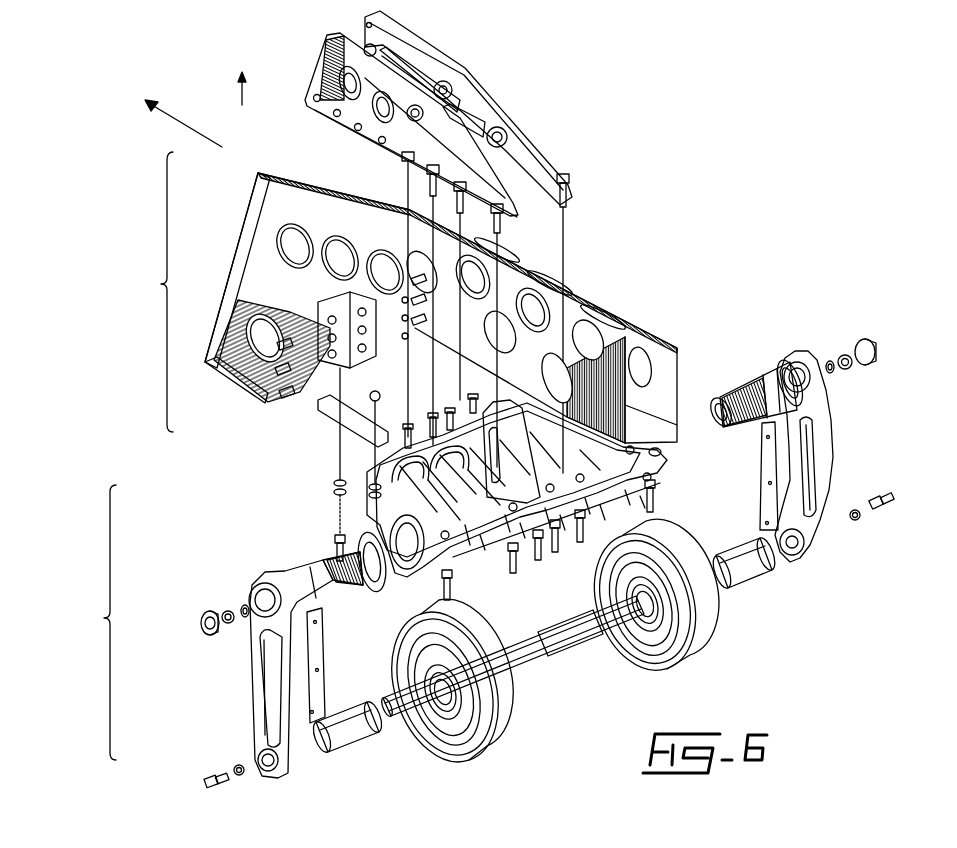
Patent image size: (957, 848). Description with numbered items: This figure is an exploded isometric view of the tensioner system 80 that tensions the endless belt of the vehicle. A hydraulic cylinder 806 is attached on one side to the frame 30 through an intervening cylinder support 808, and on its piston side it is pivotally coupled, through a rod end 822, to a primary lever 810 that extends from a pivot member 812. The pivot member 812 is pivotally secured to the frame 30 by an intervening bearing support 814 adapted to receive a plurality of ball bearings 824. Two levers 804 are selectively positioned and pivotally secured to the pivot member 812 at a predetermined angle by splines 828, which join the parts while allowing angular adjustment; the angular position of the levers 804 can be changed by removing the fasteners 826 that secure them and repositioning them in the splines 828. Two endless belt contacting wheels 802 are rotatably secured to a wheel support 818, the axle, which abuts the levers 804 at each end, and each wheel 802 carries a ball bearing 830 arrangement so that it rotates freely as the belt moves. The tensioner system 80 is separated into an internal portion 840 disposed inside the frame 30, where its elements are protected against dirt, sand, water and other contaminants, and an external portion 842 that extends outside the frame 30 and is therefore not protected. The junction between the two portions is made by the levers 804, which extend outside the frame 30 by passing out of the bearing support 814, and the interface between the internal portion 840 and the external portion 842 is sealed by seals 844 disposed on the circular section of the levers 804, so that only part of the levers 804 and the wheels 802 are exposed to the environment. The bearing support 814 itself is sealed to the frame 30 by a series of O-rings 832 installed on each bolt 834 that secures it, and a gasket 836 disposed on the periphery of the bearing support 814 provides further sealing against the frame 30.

The tensioner system 80 is at (499, 399).
The frame 30 is at (622, 332).
The endless belt contacting wheel 802 is at (708, 633).
The lever 804 is at (830, 453).
The hydraulic cylinder 806 is at (407, 73).
The cylinder support 808 is at (477, 95).
The primary lever 810 is at (537, 418).
The pivot member 812 is at (388, 463).
The bearing support 814 is at (340, 483).
The wheel support 818 is at (575, 637).
The rod end 822 is at (503, 140).
The ball bearings 824 is at (410, 567).
The fasteners 826 is at (205, 612).
The splines 828 is at (738, 392).
The ball bearing arrangement 830 is at (647, 627).
The O-rings 832 is at (663, 452).
The bolt 834 is at (513, 573).
The gasket 836 is at (658, 480).
The internal portion 840 is at (143, 292).
The external portion 842 is at (85, 622).
The seals 844 is at (815, 363).